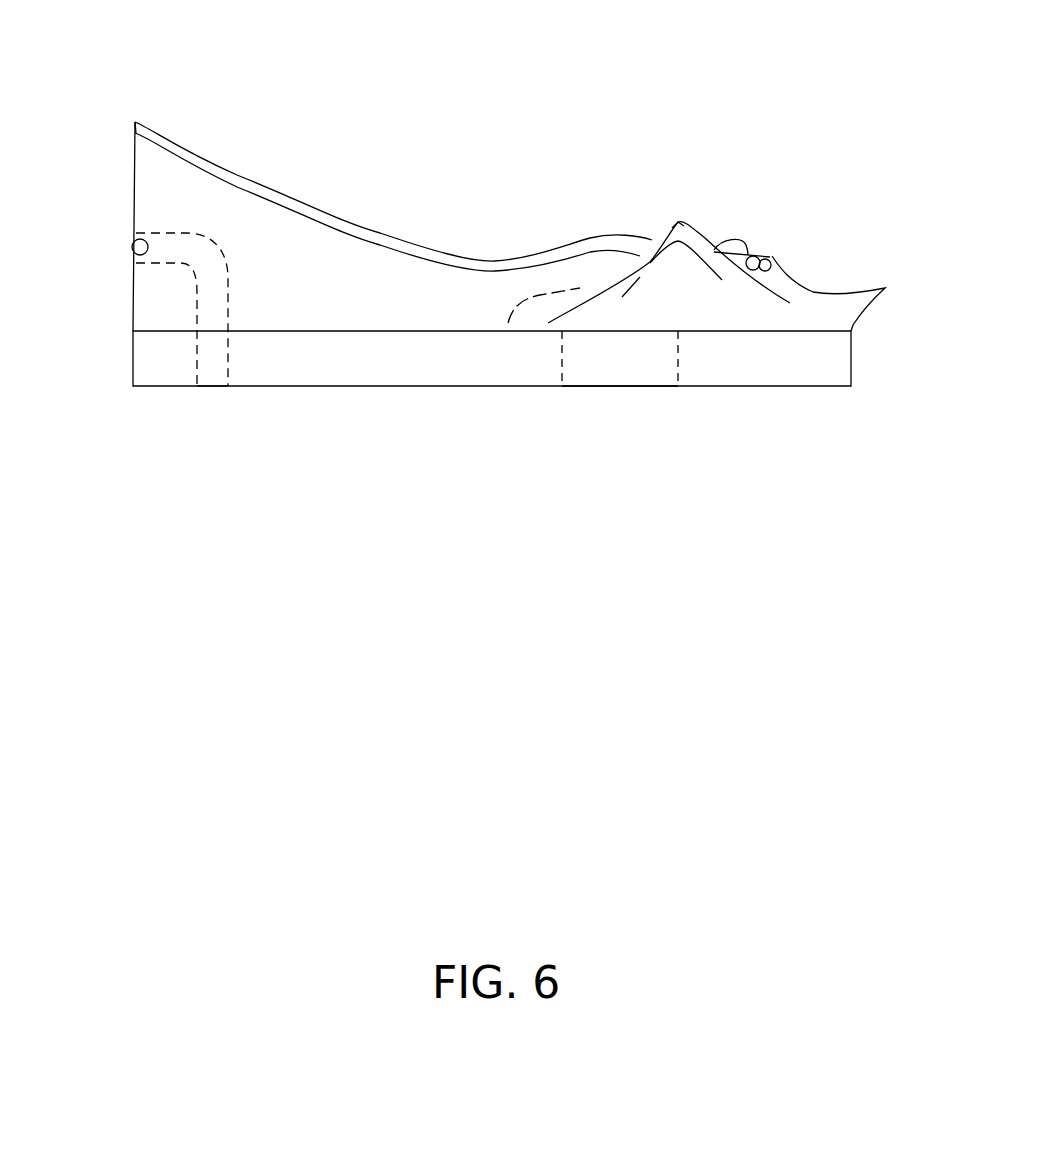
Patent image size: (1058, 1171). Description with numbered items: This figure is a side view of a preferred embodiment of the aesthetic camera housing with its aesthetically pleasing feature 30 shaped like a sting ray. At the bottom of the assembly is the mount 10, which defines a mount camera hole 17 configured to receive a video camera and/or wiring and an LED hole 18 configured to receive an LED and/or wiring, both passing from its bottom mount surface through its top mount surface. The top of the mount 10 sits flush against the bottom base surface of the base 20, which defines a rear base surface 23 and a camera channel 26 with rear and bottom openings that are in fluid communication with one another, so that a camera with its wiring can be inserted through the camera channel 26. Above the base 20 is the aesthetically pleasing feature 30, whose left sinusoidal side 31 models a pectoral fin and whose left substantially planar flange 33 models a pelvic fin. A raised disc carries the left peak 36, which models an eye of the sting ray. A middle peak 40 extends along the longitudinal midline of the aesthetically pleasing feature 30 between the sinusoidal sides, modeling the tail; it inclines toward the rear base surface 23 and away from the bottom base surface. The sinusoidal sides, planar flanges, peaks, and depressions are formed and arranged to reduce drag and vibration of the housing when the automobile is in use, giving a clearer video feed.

The mount 10 is at (857, 362).
The mount camera hole 17 is at (213, 387).
The LED hole 18 is at (627, 377).
The base 20 is at (857, 322).
The rear base surface 23 is at (135, 278).
The camera channel 26 is at (197, 237).
The aesthetically pleasing feature 30 is at (772, 137).
The left sinusoidal side 31 is at (679, 222).
The left substantially planar flange 33 is at (518, 293).
The left peak 36 is at (770, 253).
The middle peak 40 is at (173, 145).